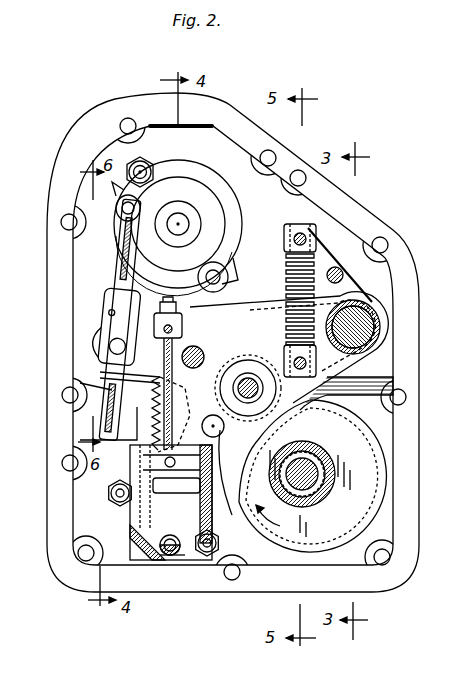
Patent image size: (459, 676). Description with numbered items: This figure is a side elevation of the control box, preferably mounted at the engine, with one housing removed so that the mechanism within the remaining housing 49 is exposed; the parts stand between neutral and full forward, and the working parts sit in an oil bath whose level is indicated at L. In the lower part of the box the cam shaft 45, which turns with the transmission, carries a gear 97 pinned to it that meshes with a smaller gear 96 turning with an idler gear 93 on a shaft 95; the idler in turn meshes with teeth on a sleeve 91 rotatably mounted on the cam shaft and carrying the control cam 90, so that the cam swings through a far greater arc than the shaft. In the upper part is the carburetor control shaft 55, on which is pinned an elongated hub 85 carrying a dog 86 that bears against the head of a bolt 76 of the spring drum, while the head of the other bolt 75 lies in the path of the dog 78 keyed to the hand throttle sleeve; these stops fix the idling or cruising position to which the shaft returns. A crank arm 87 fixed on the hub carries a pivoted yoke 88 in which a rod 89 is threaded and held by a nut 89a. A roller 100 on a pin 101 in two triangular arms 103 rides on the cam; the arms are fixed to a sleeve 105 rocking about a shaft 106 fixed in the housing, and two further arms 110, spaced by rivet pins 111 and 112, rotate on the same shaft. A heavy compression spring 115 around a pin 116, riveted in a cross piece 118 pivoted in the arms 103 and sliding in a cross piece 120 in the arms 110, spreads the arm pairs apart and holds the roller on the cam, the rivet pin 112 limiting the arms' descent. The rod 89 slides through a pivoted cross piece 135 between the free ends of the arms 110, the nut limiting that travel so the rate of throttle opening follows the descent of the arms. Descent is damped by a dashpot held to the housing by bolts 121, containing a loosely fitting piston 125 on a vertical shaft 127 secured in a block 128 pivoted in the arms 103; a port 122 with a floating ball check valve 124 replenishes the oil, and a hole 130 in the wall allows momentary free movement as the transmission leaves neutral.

The cam shaft 45 is at (340, 446).
The housing 49 is at (419, 537).
The carburetor control shaft 55 is at (186, 220).
The bolt 75 is at (142, 170).
The bolt 76 is at (209, 286).
The dog 78 is at (118, 192).
The elongated hub 85 is at (192, 208).
The dog 86 is at (236, 262).
The crank arm 87 is at (170, 196).
The yoke 88 is at (122, 262).
The rod 89 is at (112, 392).
The nut 89a is at (112, 324).
The control cam 90 is at (380, 506).
The sleeve 91 is at (318, 462).
The idler gear 93 is at (202, 428).
The shaft 95 is at (140, 453).
The smaller gear 96 is at (228, 518).
The gear 97 is at (288, 546).
The roller 100 is at (255, 370).
The pin 101 is at (250, 377).
The arms 103 is at (262, 339).
The sleeve 105 is at (375, 332).
The shaft 106 is at (356, 316).
The arms 110 is at (352, 295).
The rivet pin 111 is at (338, 264).
The rivet pin 112 is at (204, 350).
The compression spring 115 is at (284, 265).
The pin 116 is at (290, 224).
The cross piece 118 is at (352, 380).
The cross piece 120 is at (318, 232).
The bolts 121 is at (207, 556).
The port 122 is at (172, 558).
The floating ball check valve 124 is at (163, 553).
The piston 125 is at (186, 493).
The vertical shaft 127 is at (165, 403).
The block 128 is at (184, 329).
The hole 130 is at (165, 466).
The cross piece 135 is at (104, 346).
The oil level L is at (385, 380).